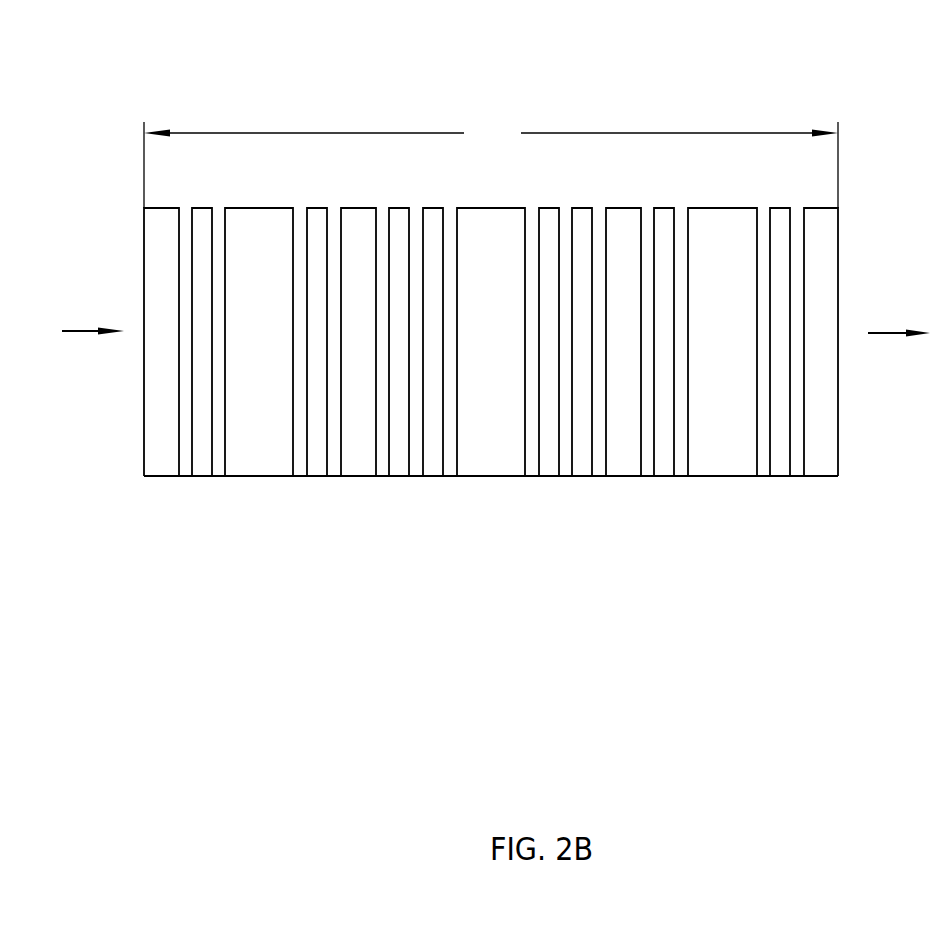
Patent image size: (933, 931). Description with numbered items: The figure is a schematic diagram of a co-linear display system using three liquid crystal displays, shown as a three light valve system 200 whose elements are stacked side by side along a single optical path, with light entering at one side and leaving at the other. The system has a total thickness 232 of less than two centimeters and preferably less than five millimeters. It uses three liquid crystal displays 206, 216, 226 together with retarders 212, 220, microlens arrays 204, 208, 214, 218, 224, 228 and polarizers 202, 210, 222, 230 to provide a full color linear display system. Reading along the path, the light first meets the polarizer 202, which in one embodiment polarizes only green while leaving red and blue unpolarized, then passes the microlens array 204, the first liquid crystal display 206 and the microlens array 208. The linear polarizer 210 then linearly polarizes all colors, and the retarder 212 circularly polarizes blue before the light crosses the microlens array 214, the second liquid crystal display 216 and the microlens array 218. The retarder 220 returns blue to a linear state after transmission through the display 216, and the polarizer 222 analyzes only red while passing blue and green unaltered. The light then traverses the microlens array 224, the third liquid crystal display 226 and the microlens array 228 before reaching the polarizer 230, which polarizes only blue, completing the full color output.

The three light valve system 200 is at (684, 119).
The polarizer 202 is at (160, 476).
The microlens array 204 is at (198, 476).
The liquid crystal display 206 is at (257, 476).
The microlens array 208 is at (313, 476).
The linear polarizer 210 is at (358, 476).
The retarder 212 is at (393, 476).
The microlens array 214 is at (432, 476).
The liquid crystal display 216 is at (505, 476).
The microlens array 218 is at (547, 476).
The retarder 220 is at (580, 476).
The polarizer 222 is at (620, 476).
The microlens array 224 is at (655, 476).
The liquid crystal display 226 is at (723, 476).
The microlens array 228 is at (773, 476).
The polarizer 230 is at (820, 476).
The total thickness 232 is at (491, 161).